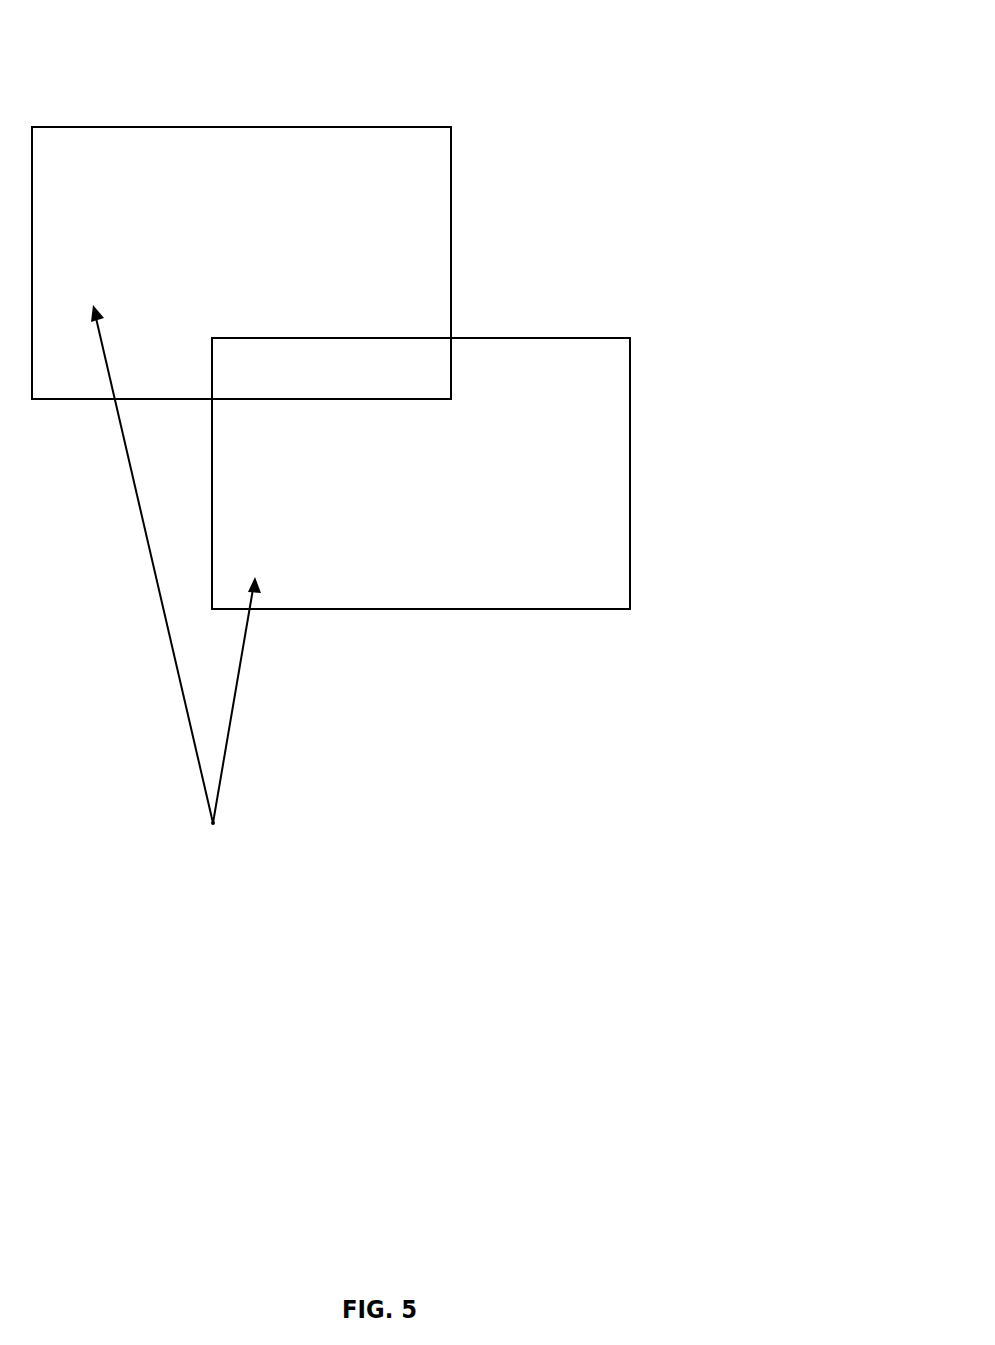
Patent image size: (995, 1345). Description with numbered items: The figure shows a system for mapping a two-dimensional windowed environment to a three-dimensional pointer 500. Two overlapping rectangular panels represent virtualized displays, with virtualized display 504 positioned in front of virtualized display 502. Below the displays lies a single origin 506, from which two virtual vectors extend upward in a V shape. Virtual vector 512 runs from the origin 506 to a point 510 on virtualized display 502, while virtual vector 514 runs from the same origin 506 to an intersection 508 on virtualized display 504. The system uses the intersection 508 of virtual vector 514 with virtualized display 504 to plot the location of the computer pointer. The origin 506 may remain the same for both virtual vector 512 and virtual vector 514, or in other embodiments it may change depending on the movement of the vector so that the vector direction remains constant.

The system for mapping a 2D windowed environment to a 3D pointer 500 is at (773, 78).
The virtualized display 502 is at (451, 262).
The virtualized display 504 is at (630, 470).
The origin 506 is at (215, 825).
The intersection 508 is at (262, 582).
The intersection 510 is at (98, 310).
The virtual vector 512 is at (152, 576).
The virtual vector 514 is at (237, 712).